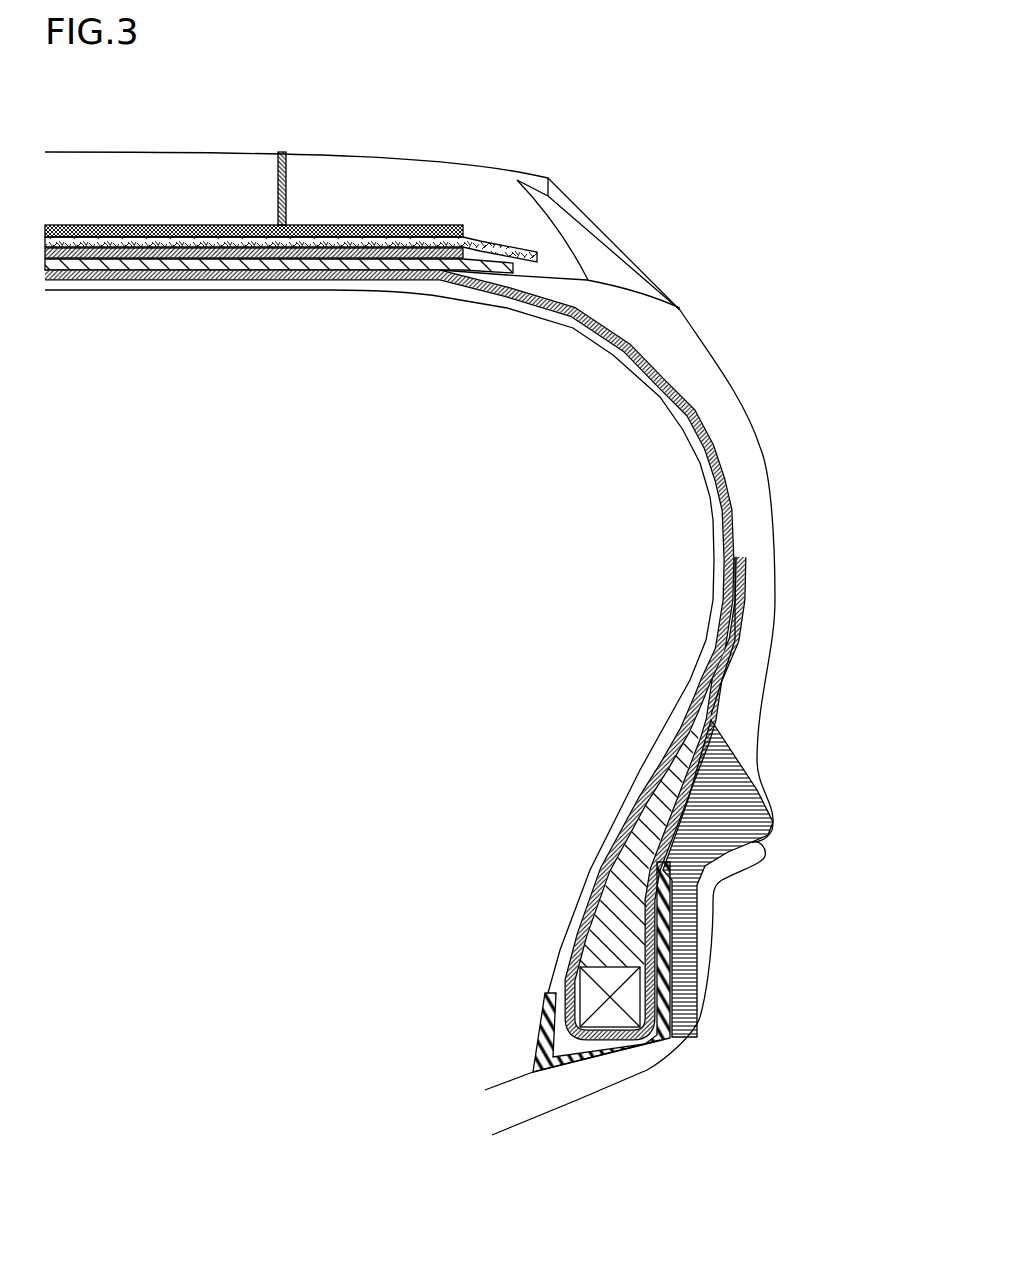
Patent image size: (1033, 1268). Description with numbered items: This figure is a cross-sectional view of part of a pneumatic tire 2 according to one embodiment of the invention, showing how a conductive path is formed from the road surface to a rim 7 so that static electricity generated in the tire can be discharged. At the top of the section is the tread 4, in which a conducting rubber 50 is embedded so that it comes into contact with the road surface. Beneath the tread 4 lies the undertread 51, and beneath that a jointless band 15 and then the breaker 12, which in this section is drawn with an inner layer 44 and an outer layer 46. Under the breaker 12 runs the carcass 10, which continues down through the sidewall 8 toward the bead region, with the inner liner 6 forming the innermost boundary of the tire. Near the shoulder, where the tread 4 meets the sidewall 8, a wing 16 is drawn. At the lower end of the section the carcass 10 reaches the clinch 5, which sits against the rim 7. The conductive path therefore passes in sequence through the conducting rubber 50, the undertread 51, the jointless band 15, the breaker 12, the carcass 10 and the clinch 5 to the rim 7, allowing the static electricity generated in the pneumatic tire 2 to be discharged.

The pneumatic tire 2 is at (439, 614).
The tread 4 is at (93, 146).
The clinch 5 is at (722, 800).
The inner liner 6 is at (95, 289).
The rim 7 is at (650, 1062).
The sidewall 8 is at (705, 376).
The carcass 10 is at (442, 283).
The breaker 12 is at (279, 318).
The jointless band 15 is at (402, 235).
The wing 16 is at (623, 273).
The inner layer 44 is at (350, 264).
The outer layer 46 is at (293, 254).
The conducting rubber 50 is at (283, 158).
The undertread 51 is at (217, 225).